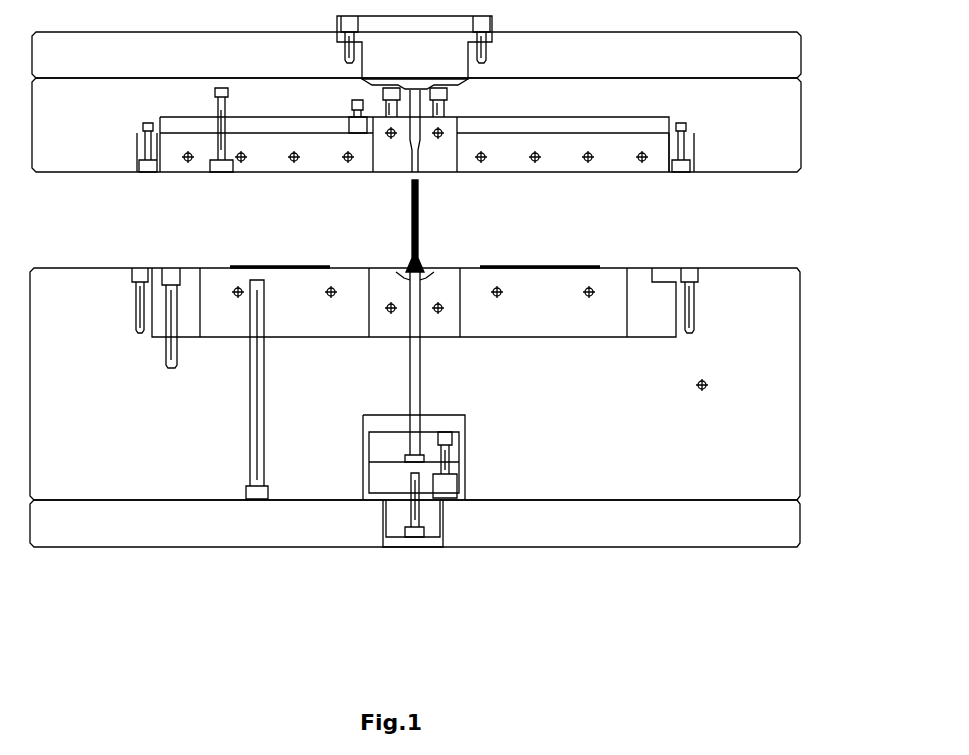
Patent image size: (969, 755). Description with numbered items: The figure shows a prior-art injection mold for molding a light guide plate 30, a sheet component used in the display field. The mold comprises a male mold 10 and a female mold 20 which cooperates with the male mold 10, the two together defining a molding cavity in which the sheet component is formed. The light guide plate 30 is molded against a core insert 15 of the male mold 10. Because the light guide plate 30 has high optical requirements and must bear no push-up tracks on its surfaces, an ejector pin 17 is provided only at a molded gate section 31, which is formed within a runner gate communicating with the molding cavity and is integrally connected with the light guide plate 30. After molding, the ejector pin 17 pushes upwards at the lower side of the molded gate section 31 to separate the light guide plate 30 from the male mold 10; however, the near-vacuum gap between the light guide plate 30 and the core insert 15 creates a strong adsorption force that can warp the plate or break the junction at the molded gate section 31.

The male mold 10 is at (774, 413).
The core insert 15 is at (232, 320).
The ejector pin 17 is at (415, 373).
The female mold 20 is at (783, 133).
The light guide plate 30 is at (512, 262).
The molded gate section 31 is at (410, 262).